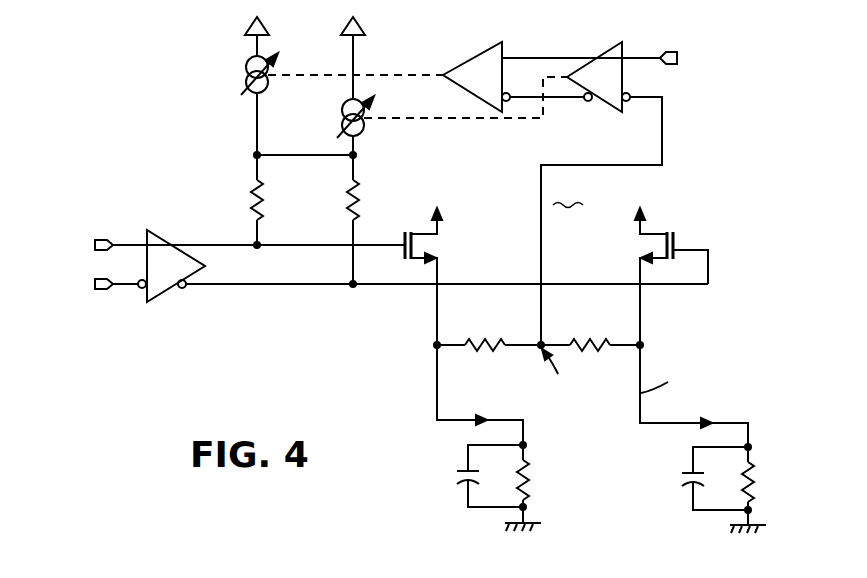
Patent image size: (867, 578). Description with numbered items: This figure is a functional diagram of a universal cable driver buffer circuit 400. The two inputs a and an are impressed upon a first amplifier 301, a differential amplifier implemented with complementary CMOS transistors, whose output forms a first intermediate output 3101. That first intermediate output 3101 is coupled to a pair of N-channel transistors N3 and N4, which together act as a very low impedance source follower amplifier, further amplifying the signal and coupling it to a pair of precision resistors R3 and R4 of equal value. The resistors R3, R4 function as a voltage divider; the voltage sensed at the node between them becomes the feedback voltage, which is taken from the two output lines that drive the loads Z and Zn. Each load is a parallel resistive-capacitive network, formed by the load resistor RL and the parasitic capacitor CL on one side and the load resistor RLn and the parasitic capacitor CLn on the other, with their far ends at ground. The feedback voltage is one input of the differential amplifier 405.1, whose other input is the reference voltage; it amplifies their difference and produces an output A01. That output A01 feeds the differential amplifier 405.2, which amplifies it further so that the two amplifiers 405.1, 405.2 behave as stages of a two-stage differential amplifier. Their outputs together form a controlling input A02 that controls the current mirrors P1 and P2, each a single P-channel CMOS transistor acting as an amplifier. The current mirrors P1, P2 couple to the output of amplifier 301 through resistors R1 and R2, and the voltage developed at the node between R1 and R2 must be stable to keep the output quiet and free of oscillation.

The universal cable driver buffer circuit 400 is at (124, 76).
The amplifier 405.1 is at (614, 56).
The amplifier 405.2 is at (476, 62).
The output A01 is at (524, 95).
The controlling input A02 is at (404, 118).
The first amplifier 301 is at (160, 283).
The first intermediate output 3101 is at (272, 279).
The current mirror P1 is at (343, 86).
The current mirror P2 is at (248, 86).
The resistor R1 is at (240, 200).
The resistor R2 is at (368, 219).
The resistor R3 is at (489, 333).
The resistor R4 is at (590, 333).
The transistor N3 is at (438, 276).
The transistor N4 is at (657, 276).
The capacitor CL is at (472, 476).
The load resistor RL is at (536, 484).
The capacitor CLn is at (689, 478).
The load resistor RLn is at (765, 486).